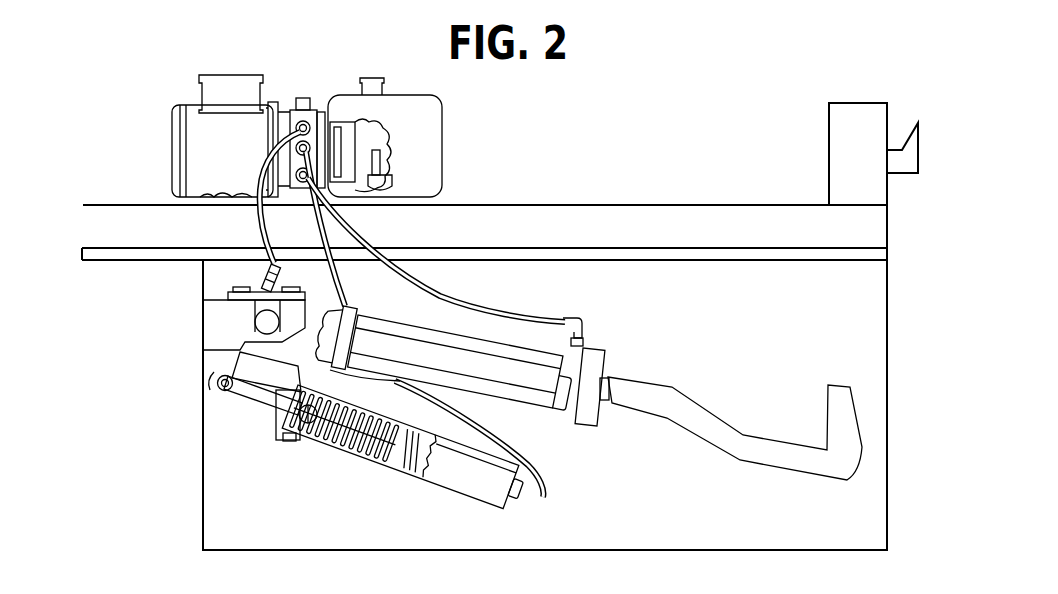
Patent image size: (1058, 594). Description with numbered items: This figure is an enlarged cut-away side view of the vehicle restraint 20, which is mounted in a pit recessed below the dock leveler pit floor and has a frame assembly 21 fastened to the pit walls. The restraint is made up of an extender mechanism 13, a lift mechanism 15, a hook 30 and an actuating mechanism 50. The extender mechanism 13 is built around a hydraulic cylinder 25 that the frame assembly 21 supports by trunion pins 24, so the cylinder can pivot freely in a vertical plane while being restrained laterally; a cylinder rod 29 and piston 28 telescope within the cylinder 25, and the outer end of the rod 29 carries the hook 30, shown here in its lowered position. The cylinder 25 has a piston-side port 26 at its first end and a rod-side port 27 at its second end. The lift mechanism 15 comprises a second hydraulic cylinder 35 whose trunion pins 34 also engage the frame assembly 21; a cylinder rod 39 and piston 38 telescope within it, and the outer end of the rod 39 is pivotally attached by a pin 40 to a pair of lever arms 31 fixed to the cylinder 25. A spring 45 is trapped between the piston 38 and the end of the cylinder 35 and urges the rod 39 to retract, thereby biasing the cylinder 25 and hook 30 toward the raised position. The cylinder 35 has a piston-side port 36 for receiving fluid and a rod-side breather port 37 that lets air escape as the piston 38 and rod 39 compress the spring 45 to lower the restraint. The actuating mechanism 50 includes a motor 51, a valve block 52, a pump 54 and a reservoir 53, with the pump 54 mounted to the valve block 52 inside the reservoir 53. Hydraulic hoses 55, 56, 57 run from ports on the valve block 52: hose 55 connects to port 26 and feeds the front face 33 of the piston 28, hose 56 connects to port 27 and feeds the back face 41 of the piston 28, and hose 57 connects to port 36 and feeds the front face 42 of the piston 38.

The extender mechanism 13 is at (498, 393).
The lift mechanism 15 is at (395, 467).
The vehicle restraint 20 is at (735, 448).
The frame assembly 21 is at (243, 360).
The trunion pins 24 is at (262, 322).
The hydraulic cylinder 25 is at (531, 412).
The port 26 is at (262, 282).
The port 27 is at (588, 337).
The piston 28 is at (367, 327).
The cylinder rod 29 is at (606, 376).
The hook 30 is at (745, 462).
The lever arms 31 is at (242, 393).
The front face 33 is at (347, 383).
The trunion pins 34 is at (276, 432).
The hydraulic cylinder 35 is at (426, 467).
The port 36 is at (516, 489).
The breather port 37 is at (288, 442).
The piston 38 is at (416, 451).
The cylinder rod 39 is at (260, 404).
The pin 40 is at (222, 389).
The back face 41 is at (445, 343).
The front face 42 is at (427, 447).
The spring 45 is at (344, 426).
The actuating mechanism 50 is at (290, 120).
The motor 51 is at (172, 143).
The valve block 52 is at (296, 110).
The reservoir 53 is at (443, 136).
The pump 54 is at (336, 120).
The hydraulic hose 55 is at (261, 229).
The hydraulic hose 56 is at (350, 225).
The hydraulic hose 57 is at (324, 240).